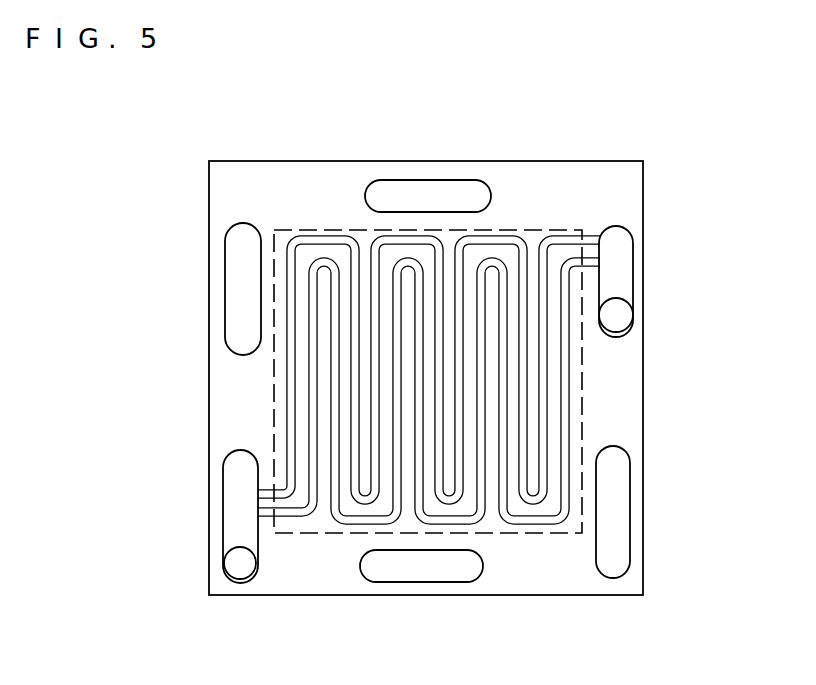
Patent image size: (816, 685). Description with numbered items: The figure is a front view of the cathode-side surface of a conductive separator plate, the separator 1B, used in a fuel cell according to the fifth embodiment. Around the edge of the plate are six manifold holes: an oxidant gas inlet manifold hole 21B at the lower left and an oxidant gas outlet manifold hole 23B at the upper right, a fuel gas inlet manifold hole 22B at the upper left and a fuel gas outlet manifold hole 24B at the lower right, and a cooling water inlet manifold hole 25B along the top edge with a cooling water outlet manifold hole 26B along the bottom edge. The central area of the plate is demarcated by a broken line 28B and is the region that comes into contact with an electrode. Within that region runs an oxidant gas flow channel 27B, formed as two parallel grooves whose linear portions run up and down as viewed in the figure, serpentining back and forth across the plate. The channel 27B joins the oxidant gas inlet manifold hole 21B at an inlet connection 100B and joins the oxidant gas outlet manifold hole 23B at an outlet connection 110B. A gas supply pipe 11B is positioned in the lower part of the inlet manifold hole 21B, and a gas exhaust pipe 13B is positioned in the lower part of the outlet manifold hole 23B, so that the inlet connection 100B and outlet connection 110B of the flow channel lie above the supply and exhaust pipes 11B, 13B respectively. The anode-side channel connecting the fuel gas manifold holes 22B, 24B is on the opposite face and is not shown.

The separator 1B is at (592, 161).
The oxidant gas flow channel 27B is at (338, 235).
The broken line 28B is at (582, 398).
The inlet connection 100B is at (257, 516).
The outlet connection 110B is at (602, 265).
The oxidant gas inlet manifold hole 21B is at (220, 503).
The fuel gas inlet manifold hole 22B is at (225, 263).
The oxidant gas outlet manifold hole 23B is at (633, 244).
The fuel gas outlet manifold hole 24B is at (630, 488).
The cooling water inlet manifold hole 25B is at (438, 180).
The cooling water outlet manifold hole 26B is at (420, 583).
The gas supply pipe 11B is at (240, 563).
The gas exhaust pipe 13B is at (613, 315).